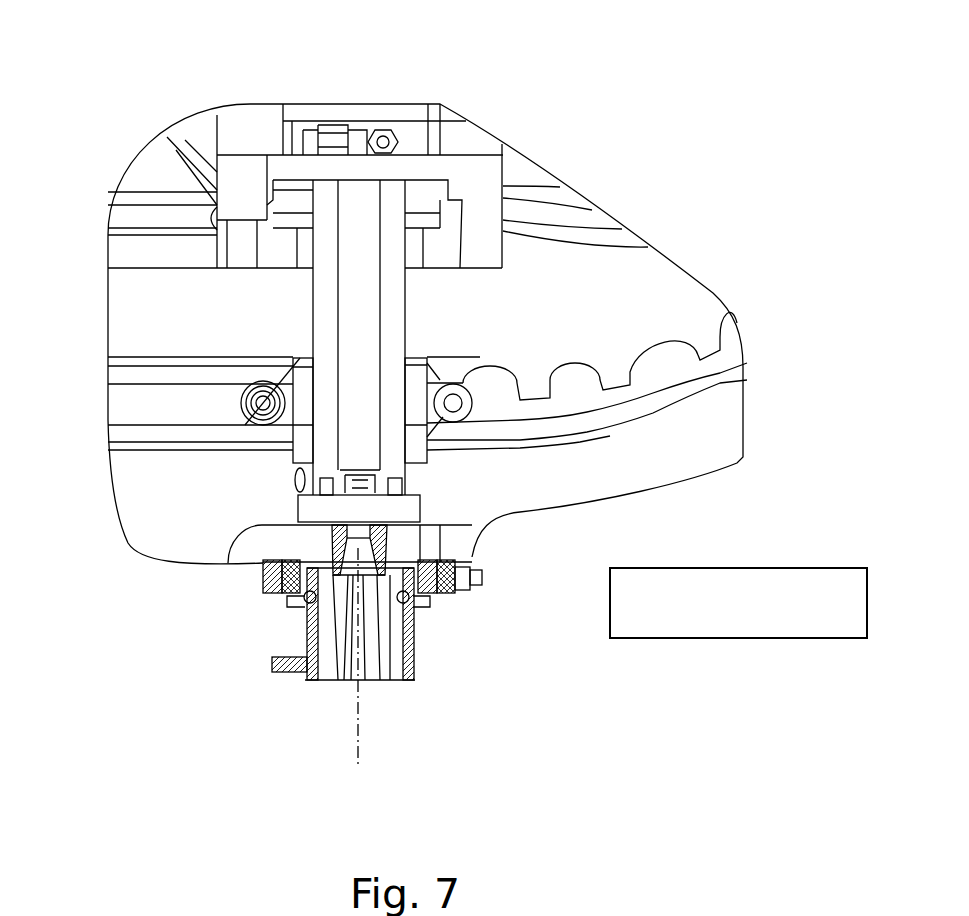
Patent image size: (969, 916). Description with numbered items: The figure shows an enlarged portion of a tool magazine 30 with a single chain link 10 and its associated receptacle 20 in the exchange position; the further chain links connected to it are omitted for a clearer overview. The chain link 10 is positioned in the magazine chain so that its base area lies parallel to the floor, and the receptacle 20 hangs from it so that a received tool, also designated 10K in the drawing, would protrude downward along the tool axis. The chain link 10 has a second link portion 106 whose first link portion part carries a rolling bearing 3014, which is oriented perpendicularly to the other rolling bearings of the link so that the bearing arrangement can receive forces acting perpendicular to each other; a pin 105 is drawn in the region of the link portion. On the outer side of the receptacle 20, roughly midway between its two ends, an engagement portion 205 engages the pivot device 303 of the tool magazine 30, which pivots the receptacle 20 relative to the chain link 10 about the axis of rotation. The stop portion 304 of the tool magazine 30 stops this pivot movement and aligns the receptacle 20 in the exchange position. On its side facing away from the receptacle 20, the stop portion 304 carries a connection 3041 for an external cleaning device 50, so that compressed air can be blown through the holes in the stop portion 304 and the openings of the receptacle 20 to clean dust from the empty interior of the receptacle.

The tool magazine 30 is at (510, 96).
The pivot device 303 is at (350, 297).
The rolling bearing 3014 is at (255, 392).
The second link portion 106 is at (300, 357).
The pin 105 is at (453, 403).
The chain link 10 is at (283, 418).
The tool with clamping cone 10K is at (427, 357).
The receptacle 20 is at (370, 667).
The engagement portion 205 is at (283, 597).
The stop portion 304 is at (440, 600).
The connection 3041 is at (470, 593).
The cleaning device 50 is at (738, 603).